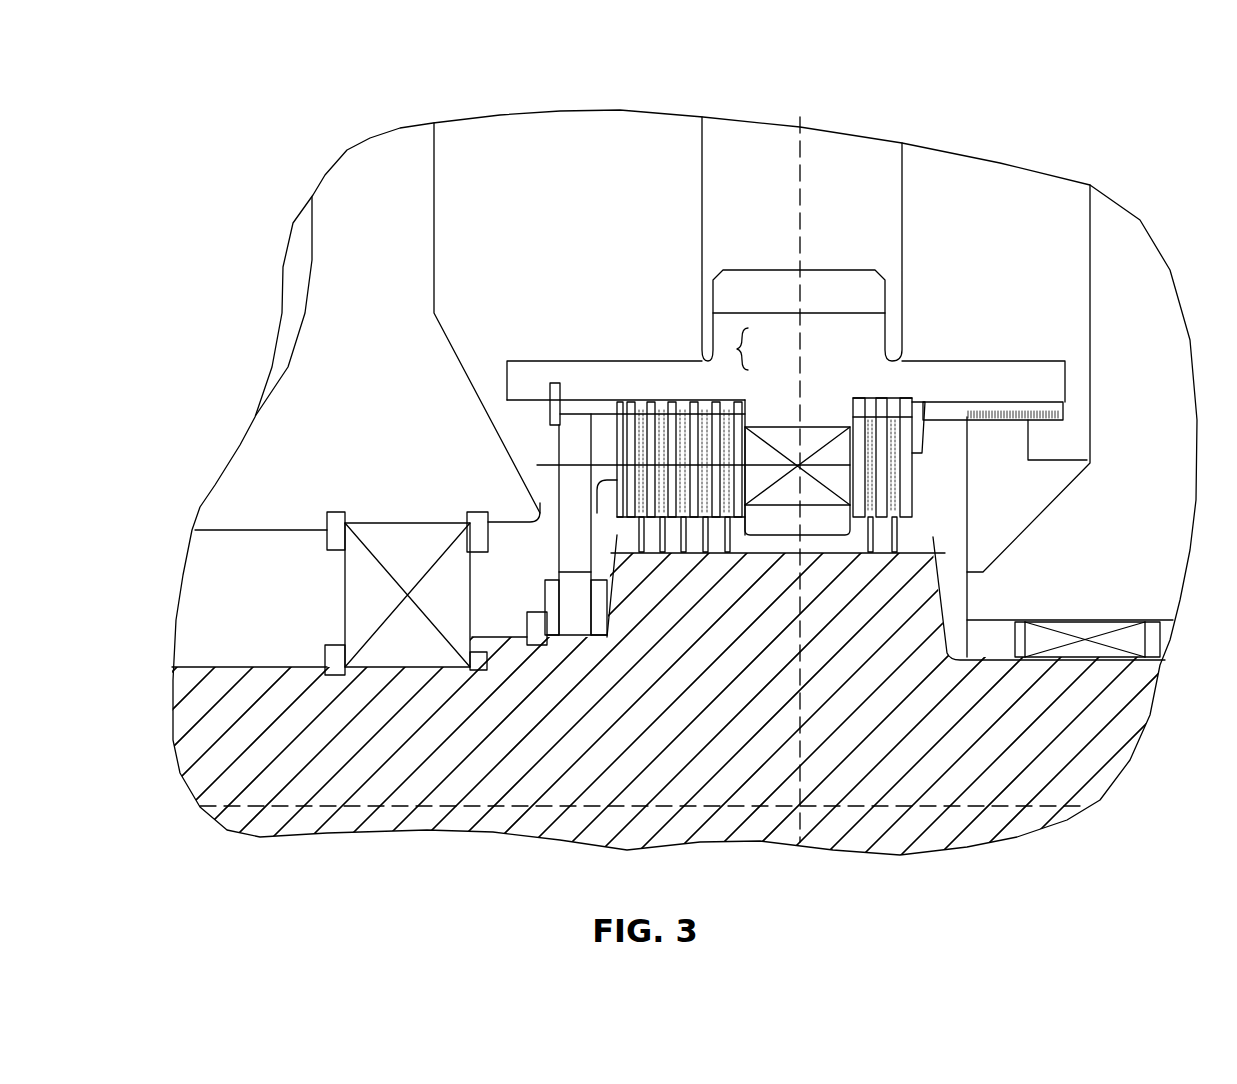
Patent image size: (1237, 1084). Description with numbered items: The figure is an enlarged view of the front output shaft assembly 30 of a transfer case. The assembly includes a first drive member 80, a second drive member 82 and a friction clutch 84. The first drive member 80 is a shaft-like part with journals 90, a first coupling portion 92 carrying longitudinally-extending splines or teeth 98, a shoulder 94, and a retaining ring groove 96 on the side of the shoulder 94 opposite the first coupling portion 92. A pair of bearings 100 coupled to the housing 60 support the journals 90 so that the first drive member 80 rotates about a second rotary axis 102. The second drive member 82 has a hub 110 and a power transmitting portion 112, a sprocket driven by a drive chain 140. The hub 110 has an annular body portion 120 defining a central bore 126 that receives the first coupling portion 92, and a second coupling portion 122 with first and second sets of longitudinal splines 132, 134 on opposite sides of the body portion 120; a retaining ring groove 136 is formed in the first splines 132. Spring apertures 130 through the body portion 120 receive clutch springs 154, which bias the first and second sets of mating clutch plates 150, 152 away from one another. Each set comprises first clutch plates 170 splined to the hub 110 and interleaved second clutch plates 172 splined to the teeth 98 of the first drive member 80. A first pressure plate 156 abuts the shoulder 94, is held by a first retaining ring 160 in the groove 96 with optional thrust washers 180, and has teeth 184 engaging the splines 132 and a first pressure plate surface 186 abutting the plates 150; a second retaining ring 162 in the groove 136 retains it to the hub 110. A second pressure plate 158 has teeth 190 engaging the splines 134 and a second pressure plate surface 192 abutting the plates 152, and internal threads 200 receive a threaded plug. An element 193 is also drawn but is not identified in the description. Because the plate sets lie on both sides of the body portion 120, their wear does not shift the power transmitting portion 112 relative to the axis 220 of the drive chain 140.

The front output shaft assembly 30 is at (995, 313).
The housing 60 is at (1118, 530).
The first drive member 80 is at (922, 648).
The second drive member 82 is at (885, 371).
The friction clutch 84 is at (914, 406).
The journals 90 is at (380, 725).
The first coupling portion 92 is at (743, 570).
The shoulder 94 is at (603, 625).
The retaining ring groove 96 is at (537, 647).
The longitudinally-extending splines or teeth 98 is at (818, 552).
The bearings 100 is at (378, 530).
The second rotary axis 102 is at (850, 806).
The hub 110 is at (700, 363).
The power transmitting portion 112 is at (727, 325).
The body portion 120 is at (783, 383).
The second coupling portion 122 is at (733, 349).
The central bore 126 is at (538, 422).
The spring apertures 130 is at (770, 510).
The first set of longitudinally extending splines or teeth 132 is at (770, 358).
The second set of longitudinally extending splines or teeth 134 is at (800, 337).
The retaining ring groove 136 is at (555, 383).
The drive chain 140 is at (905, 193).
The first set of mating clutch plates 150 is at (614, 513).
The second set of mating clutch plates 152 is at (915, 455).
The clutch springs 154 is at (815, 452).
The first pressure plate 156 is at (568, 486).
The second pressure plate 158 is at (962, 430).
The first retaining ring 160 is at (530, 613).
The second retaining ring 162 is at (550, 400).
The first clutch plates 170 is at (617, 503).
The second clutch plates 172 is at (638, 525).
The thrust washers 180 is at (552, 625).
The teeth 184 is at (615, 458).
The first pressure plate surface 186 is at (592, 424).
The teeth 190 is at (942, 422).
The second pressure plate surface 192 is at (909, 477).
The seal lip 193 is at (1017, 427).
The internal threads 200 is at (1047, 405).
The axis 220 is at (803, 160).